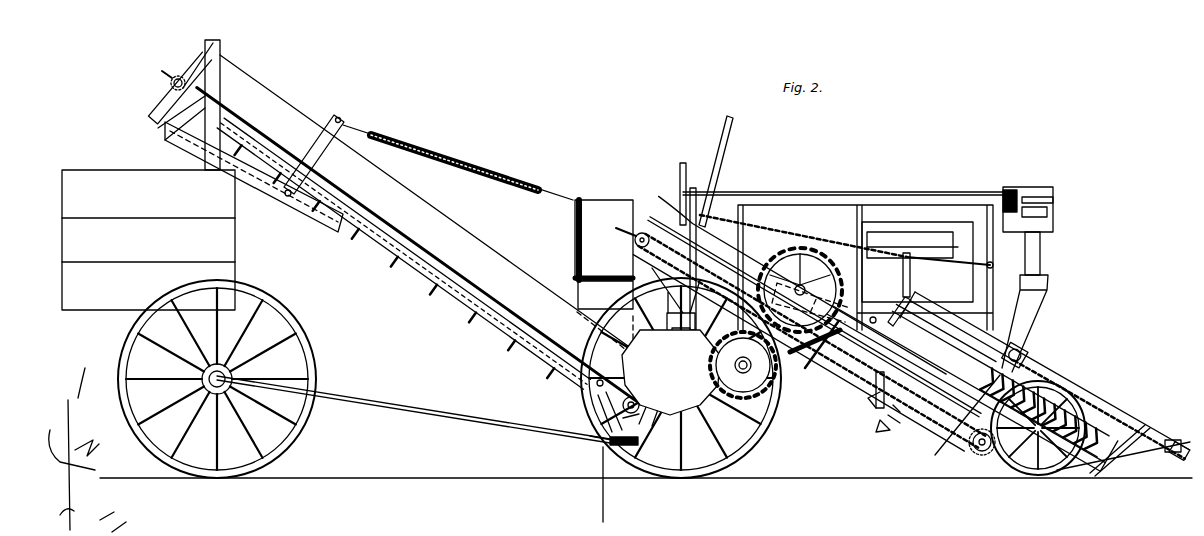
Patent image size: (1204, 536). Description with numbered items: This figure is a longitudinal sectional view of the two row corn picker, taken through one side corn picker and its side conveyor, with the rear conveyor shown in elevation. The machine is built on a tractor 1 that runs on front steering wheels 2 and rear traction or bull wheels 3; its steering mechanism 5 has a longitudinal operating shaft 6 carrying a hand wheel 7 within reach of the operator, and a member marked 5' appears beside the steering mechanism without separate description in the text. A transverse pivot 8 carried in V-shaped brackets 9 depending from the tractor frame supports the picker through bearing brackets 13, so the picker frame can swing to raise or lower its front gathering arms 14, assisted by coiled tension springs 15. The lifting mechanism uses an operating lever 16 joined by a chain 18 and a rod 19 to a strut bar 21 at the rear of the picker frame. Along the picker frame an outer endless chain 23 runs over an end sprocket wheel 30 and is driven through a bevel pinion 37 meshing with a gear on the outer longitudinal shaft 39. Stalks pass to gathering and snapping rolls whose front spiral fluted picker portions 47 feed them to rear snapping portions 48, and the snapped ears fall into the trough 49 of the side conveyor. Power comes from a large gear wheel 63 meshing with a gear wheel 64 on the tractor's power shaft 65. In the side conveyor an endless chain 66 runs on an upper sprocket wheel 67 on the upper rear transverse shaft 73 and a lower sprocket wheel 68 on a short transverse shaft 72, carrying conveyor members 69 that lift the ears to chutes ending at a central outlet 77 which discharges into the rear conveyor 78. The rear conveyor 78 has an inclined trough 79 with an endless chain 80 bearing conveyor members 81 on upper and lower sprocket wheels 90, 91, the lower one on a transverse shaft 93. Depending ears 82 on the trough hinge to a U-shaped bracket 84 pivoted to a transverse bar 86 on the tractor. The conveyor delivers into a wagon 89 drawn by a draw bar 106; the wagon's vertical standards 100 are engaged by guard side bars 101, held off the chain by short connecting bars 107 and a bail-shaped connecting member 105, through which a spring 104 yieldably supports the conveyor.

The tractor 1 is at (910, 206).
The front steering wheels 2 is at (1038, 478).
The rear traction or bull wheels 3 is at (742, 456).
The steering mechanism 5 is at (1040, 269).
The brace 5' is at (959, 425).
The operating shaft 6 is at (605, 232).
The hand wheel 7 is at (684, 165).
The transverse pivot 8 is at (881, 422).
The brackets 9 is at (899, 414).
The bearing brackets 13 is at (1098, 408).
The front gathering arms 14 is at (1152, 420).
The coiled tension springs 15 is at (811, 373).
The operating lever 16 is at (734, 146).
The cable or chain 18 is at (832, 244).
The rod 19 is at (913, 253).
The strut bar 21 is at (902, 280).
The outer endless chain 23 is at (1066, 397).
The end sprocket wheel 30 is at (1156, 440).
The bevel pinion 37 is at (1040, 368).
The outer longitudinal shaft 39 is at (942, 318).
The front spiral fluted picker portions 47 is at (1110, 432).
The rear snapping portions 48 is at (972, 362).
The trough 49 is at (823, 337).
The large gear wheel 63 is at (797, 254).
The gear wheel 64 is at (756, 404).
The pulley shaft or power shaft 65 is at (740, 374).
The endless chains 66 is at (892, 420).
The upper sprocket wheels 67 is at (690, 231).
The lower sprocket wheels 68 is at (983, 454).
The conveyor members 69 is at (698, 254).
The short transverse shafts 72 is at (976, 450).
The upper rear transverse shaft 73 is at (642, 232).
The lower central outlet 77 is at (590, 313).
The rear conveyor 78 is at (435, 218).
The inclined conveyor trough 79 is at (440, 215).
The endless chain 80 is at (484, 324).
The conveyor members 81 is at (413, 280).
The depending ears 82 is at (634, 397).
The U-shaped bracket 84 is at (606, 439).
The transverse bar 86 is at (640, 442).
The wagon 89 is at (83, 172).
The upper sprocket wheel 90 is at (178, 76).
The lower sprocket wheel 91 is at (612, 393).
The lower transverse shaft 93 is at (656, 415).
The vertical standards 100 is at (222, 54).
The longitudinal side bars 101 is at (322, 226).
The spring 104 is at (472, 168).
The connecting member 105 is at (337, 118).
The draw bar 106 is at (406, 402).
The short connecting bars 107 is at (168, 103).